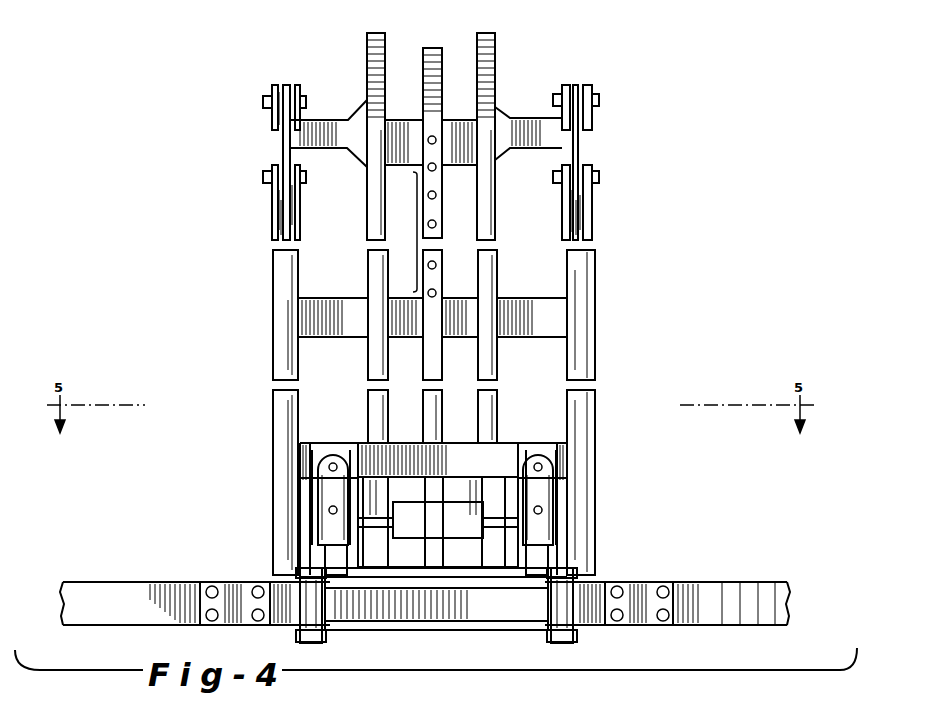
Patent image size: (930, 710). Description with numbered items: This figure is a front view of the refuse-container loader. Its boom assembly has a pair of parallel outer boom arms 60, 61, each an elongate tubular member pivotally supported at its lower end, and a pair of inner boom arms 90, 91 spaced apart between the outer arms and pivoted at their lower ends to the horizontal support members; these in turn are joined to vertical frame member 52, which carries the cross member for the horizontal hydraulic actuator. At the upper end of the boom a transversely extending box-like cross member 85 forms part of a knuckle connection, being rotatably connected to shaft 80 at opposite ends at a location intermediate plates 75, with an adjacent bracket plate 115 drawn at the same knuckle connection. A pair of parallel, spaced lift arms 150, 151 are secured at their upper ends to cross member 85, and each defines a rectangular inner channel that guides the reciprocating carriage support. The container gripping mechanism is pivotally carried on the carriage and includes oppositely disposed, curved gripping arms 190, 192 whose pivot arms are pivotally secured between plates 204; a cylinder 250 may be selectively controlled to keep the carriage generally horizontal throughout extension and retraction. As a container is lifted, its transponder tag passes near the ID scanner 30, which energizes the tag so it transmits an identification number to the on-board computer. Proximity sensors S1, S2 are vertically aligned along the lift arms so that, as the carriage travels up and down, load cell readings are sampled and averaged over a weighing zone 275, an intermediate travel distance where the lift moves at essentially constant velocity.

The ID scanner 30 is at (462, 502).
The vertical frame member 52 is at (435, 224).
The proximity sensor S1 is at (436, 291).
The proximity sensor S2 is at (436, 138).
The outer boom arm 60 is at (286, 293).
The outer boom arm 61 is at (578, 288).
The plate 75 is at (594, 136).
The shaft 80 is at (595, 102).
The cross member 85 is at (538, 118).
The inner boom arm 90 is at (272, 270).
The inner boom arm 91 is at (596, 252).
The lower bracket plates 115 is at (592, 149).
The lift arm 150 is at (374, 277).
The lift arm 151 is at (487, 276).
The gripping arm 190 is at (718, 584).
The gripping arm 192 is at (136, 566).
The plate 204 is at (506, 633).
The cylinder 250 is at (313, 502).
The weighing zone 275 is at (417, 230).